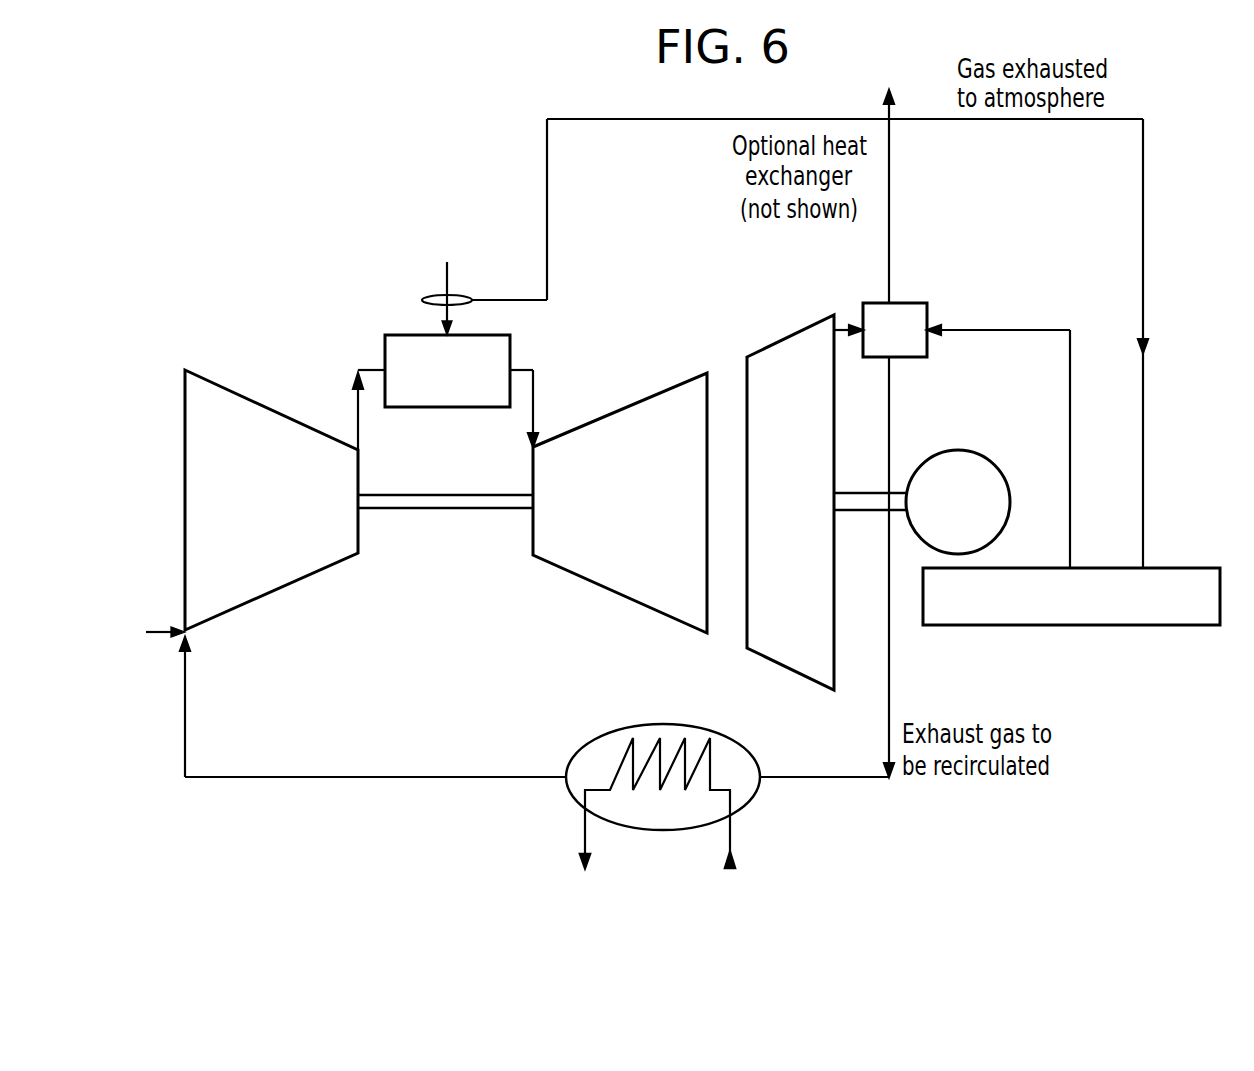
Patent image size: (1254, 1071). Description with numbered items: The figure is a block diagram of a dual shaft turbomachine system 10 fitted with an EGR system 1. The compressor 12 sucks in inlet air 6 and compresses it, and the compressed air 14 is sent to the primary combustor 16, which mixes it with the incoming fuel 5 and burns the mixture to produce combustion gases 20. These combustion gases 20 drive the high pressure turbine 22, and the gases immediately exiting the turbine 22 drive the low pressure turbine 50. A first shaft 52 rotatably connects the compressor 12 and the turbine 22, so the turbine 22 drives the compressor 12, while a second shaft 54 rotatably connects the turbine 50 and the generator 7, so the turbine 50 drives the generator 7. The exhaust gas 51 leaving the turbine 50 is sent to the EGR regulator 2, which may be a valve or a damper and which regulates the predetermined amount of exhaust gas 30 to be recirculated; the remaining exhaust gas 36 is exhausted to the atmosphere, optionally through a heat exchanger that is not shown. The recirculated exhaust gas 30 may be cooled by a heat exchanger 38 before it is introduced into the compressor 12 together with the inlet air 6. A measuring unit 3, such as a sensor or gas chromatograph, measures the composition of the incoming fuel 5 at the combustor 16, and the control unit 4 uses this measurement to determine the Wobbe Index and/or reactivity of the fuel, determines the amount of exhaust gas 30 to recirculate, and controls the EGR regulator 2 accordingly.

The EGR system 1 is at (1172, 225).
The EGR regulator 2 is at (928, 313).
The measuring unit 3 is at (430, 295).
The control unit 4 is at (1172, 567).
The incoming fuel 5 is at (455, 297).
The inlet air 6 is at (130, 640).
The generator 7 is at (950, 450).
The turbomachine system 10 is at (352, 180).
The compressor 12 is at (243, 397).
The compressed air 14 is at (360, 430).
The combustor 16 is at (388, 334).
The combustion gases 20 is at (535, 400).
The turbine 22 is at (626, 405).
The exhaust gas 30 is at (889, 670).
The remaining exhaust gas 36 is at (889, 165).
The heat exchanger 38 is at (745, 808).
The turbine 50 is at (783, 345).
The exhaust gas 51 is at (855, 325).
The first shaft 52 is at (440, 510).
The second shaft 54 is at (855, 512).